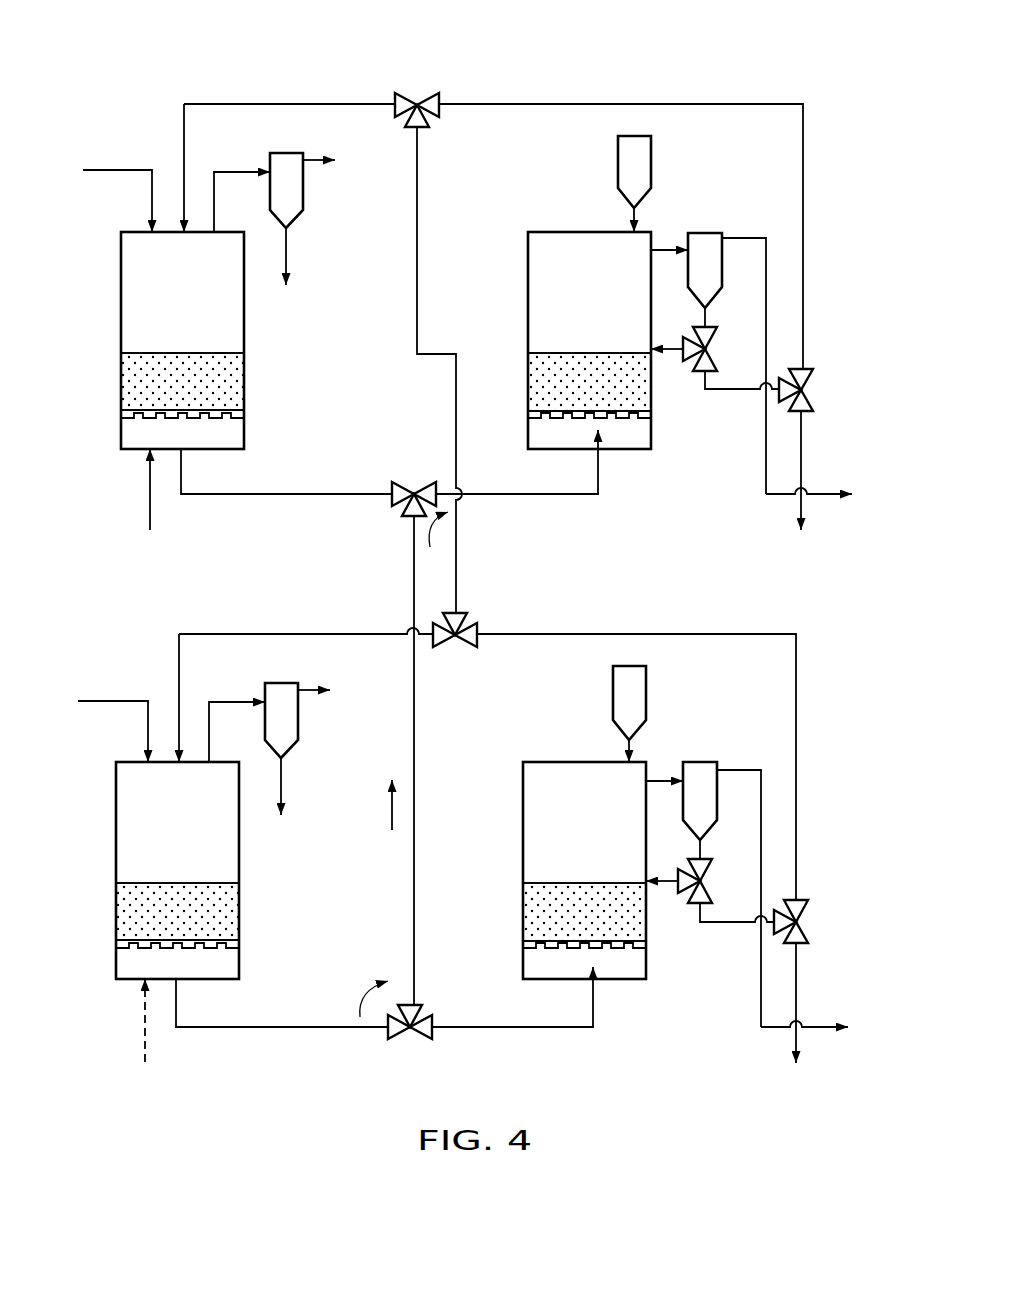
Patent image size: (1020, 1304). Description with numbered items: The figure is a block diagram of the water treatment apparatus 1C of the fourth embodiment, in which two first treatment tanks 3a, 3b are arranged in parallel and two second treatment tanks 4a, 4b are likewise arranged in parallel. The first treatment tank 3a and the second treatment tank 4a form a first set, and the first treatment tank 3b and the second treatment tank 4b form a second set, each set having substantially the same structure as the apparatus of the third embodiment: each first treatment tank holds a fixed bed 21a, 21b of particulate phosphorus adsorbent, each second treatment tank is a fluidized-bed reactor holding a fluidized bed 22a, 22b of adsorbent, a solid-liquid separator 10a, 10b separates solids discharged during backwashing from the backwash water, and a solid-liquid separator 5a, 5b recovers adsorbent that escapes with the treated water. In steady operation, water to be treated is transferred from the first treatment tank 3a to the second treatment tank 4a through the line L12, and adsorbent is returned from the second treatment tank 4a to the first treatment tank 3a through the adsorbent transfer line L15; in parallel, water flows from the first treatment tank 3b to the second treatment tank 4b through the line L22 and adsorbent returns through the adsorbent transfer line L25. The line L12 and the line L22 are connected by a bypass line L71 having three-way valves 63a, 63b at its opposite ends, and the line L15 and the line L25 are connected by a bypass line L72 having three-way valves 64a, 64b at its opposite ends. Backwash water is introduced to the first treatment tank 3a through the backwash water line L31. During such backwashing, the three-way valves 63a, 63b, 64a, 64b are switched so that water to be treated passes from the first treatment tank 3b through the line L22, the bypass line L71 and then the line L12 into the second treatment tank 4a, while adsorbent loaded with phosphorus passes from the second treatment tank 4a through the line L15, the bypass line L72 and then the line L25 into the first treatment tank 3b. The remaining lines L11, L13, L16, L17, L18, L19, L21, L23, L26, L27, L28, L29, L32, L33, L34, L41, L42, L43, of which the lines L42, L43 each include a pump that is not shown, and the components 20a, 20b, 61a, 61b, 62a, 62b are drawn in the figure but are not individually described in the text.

The water treatment apparatus 1C is at (483, 24).
The first treatment tank 3a is at (121, 264).
The first treatment tank 3b is at (153, 870).
The second treatment tank 4a is at (528, 264).
The second treatment tank 4b is at (561, 870).
The solid-liquid separator 5a is at (712, 233).
The solid-liquid separator 5b is at (722, 869).
The solid-liquid separator 10a is at (303, 194).
The solid-liquid separator 10b is at (311, 720).
The hopper 20a is at (651, 153).
The hopper 20b is at (660, 714).
The fixed bed 21a is at (121, 390).
The fixed bed 21b is at (150, 915).
The fluidized bed 22a is at (528, 392).
The fluidized bed 22b is at (558, 915).
The three-way valve 61a is at (698, 371).
The three-way valve 61b is at (710, 895).
The three-way valve 62a is at (813, 398).
The three-way valve 62b is at (816, 924).
The three-way valve 63a is at (419, 482).
The three-way valve 63b is at (420, 1042).
The three-way valve 64a is at (425, 93).
The three-way valve 64b is at (465, 650).
The gas supply line L11 is at (112, 170).
The line L12 is at (303, 494).
The gas line L13 is at (669, 250).
The adsorbent transfer line L15 is at (257, 104).
The discharge line L16 is at (801, 448).
The discharge line L17 is at (766, 472).
The gas line L18 is at (232, 172).
The gas discharge line L19 is at (316, 160).
The gas supply line L21 is at (113, 707).
The line L22 is at (384, 1025).
The gas line L23 is at (664, 756).
The adsorbent transfer line L25 is at (251, 634).
The discharge line L26 is at (824, 1003).
The discharge line L27 is at (774, 1008).
The gas line L28 is at (237, 707).
The gas discharge line L29 is at (311, 665).
The backwash water line L31 is at (150, 502).
The supply line L32 is at (111, 1022).
The particle discharge line L33 is at (286, 255).
The particle discharge line L34 is at (310, 786).
The particle return line L41 is at (705, 317).
The line L42 is at (735, 389).
The line L43 is at (672, 349).
The bypass line L71 is at (412, 883).
The bypass line L72 is at (417, 313).